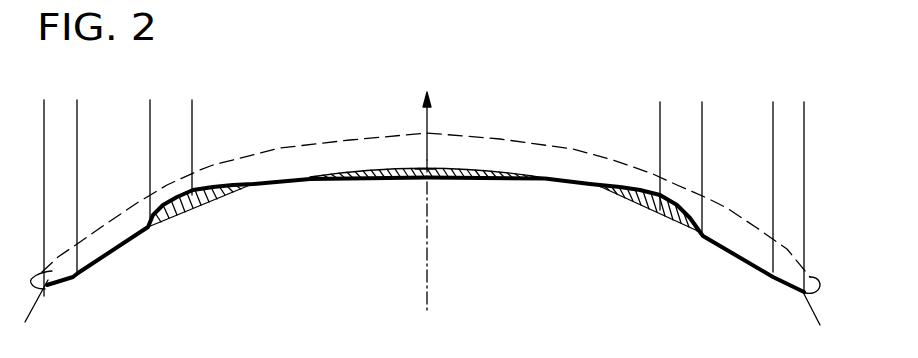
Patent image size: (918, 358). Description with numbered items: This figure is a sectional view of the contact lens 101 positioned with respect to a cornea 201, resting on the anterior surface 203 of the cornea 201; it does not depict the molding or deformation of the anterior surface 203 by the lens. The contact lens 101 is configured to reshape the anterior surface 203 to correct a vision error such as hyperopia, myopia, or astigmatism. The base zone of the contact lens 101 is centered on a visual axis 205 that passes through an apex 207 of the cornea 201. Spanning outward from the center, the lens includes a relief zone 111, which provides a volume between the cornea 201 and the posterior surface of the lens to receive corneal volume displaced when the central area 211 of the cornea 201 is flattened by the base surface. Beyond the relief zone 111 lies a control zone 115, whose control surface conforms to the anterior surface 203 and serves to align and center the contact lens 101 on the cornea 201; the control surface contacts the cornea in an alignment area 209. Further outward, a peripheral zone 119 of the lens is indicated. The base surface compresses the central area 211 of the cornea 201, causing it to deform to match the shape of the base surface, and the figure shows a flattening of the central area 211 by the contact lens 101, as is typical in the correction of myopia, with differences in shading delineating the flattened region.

The contact lens 101 is at (214, 184).
The relief zone 111 is at (192, 93).
The control zone 115 is at (150, 93).
The peripheral zone 119 is at (77, 93).
The cornea 201 is at (813, 317).
The anterior surface 203 is at (480, 170).
The visual axis 205 is at (427, 252).
The apex 207 is at (424, 168).
The alignment area 209 is at (153, 228).
The central area 211 is at (577, 307).